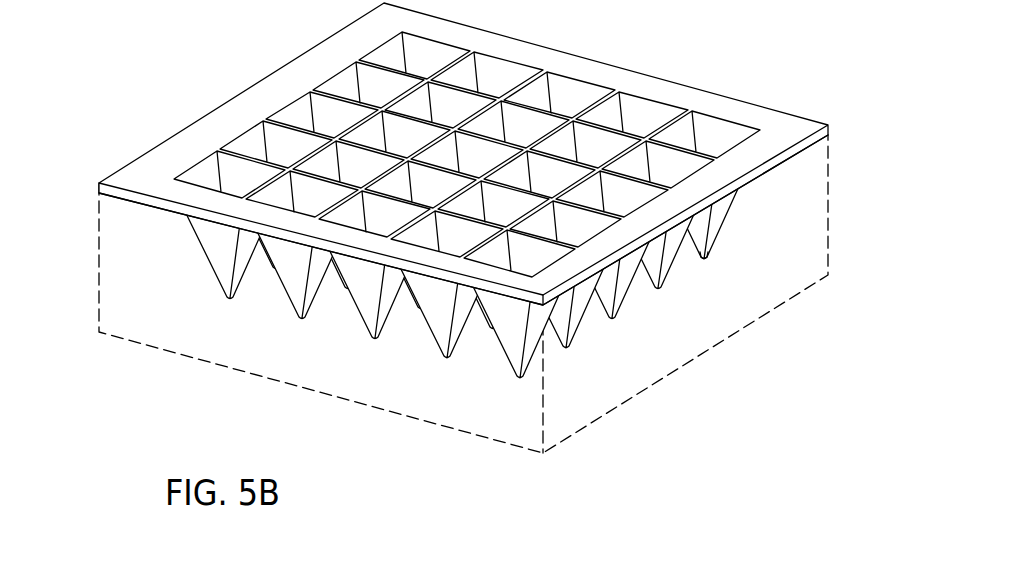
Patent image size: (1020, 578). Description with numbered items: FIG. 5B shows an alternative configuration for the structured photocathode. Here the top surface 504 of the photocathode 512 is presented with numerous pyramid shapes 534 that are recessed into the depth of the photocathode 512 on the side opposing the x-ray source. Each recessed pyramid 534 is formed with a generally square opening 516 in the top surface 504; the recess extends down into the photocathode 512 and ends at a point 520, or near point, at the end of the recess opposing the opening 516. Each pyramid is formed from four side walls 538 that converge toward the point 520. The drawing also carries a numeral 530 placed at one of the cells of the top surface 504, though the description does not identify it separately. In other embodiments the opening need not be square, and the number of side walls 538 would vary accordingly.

The top surface 504 is at (592, 72).
The photocathode 512 is at (93, 183).
The square opening 516 is at (436, 58).
The point 520 is at (705, 263).
The cell 530 is at (727, 137).
The pyramid shape 534 is at (728, 231).
The side wall 538 is at (212, 300).